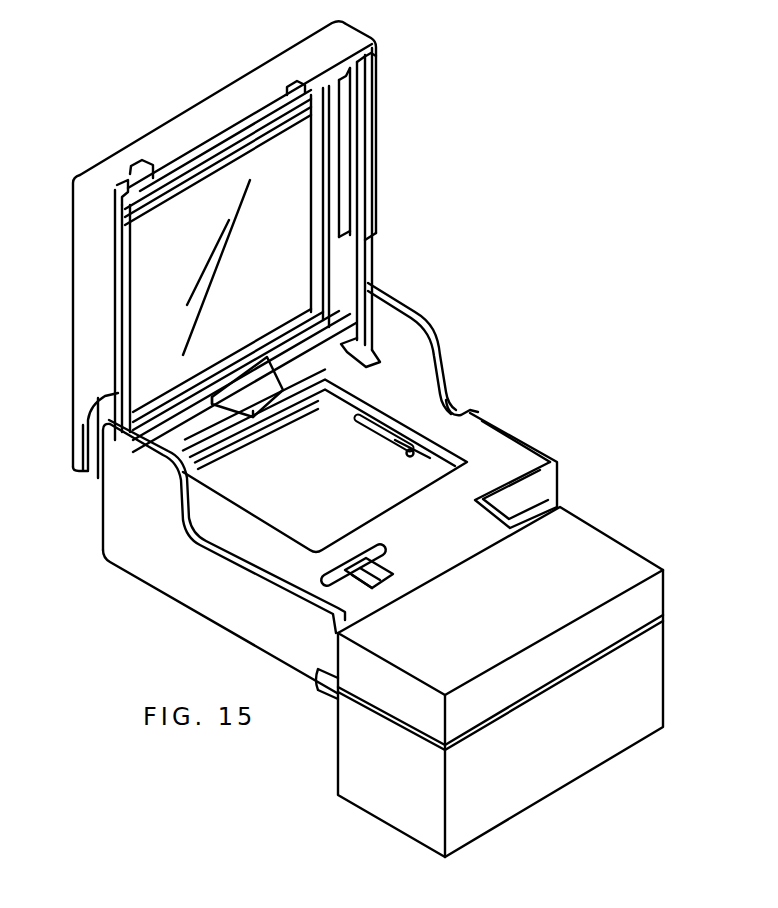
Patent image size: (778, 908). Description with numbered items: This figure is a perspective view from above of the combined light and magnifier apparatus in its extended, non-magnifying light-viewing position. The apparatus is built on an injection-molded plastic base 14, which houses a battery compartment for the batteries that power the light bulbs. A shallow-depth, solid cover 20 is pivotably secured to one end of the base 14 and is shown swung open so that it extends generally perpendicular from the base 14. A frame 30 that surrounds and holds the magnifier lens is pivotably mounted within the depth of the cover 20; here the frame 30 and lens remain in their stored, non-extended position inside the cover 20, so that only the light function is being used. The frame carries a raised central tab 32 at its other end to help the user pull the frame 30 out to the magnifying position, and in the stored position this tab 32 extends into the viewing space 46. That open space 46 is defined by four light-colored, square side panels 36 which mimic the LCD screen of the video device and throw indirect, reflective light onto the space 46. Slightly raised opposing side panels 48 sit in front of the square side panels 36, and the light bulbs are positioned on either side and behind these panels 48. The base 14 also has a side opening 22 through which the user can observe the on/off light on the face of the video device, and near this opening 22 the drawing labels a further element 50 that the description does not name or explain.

The base 14 is at (169, 562).
The cover 20 is at (86, 306).
The side opening 22 is at (472, 413).
The frame 30 is at (330, 178).
The raised central tab 32 is at (263, 397).
The side panels 36 is at (428, 458).
The open space 46 is at (296, 301).
The opposing side panels 48 is at (378, 443).
The cable 50 is at (443, 406).